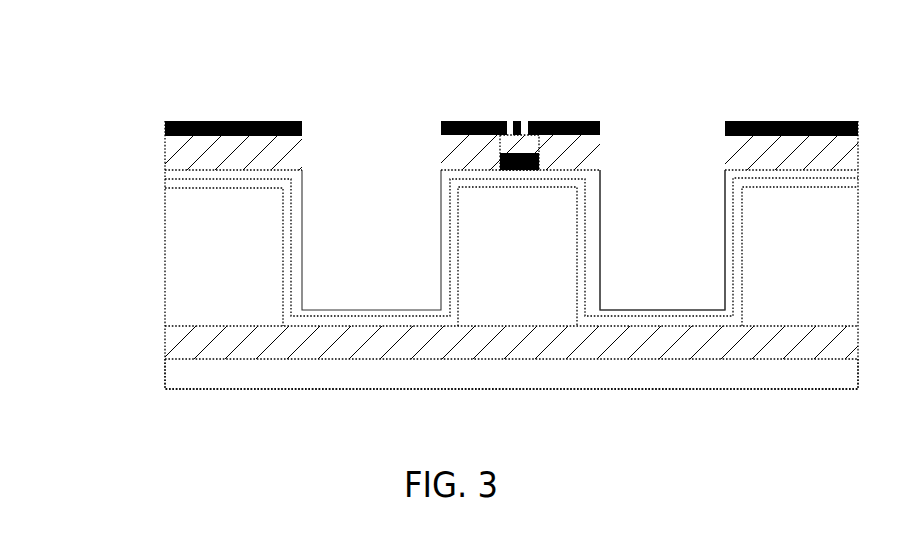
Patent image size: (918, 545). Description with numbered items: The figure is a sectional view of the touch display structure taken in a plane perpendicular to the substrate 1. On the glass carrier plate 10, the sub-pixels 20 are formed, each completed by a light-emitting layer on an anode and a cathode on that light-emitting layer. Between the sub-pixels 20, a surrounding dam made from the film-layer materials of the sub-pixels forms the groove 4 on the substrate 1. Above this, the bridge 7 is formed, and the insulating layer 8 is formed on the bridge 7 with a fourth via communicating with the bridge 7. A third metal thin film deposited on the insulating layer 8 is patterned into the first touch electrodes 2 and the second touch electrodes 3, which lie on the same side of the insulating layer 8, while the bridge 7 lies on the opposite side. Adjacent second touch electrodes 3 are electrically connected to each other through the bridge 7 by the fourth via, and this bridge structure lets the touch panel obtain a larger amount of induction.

The substrate 1 is at (165, 345).
The glass carrier plate 10 is at (165, 375).
The sub-pixels 20 is at (165, 235).
The first touch electrode 2 is at (517, 121).
The second touch electrode 3 is at (236, 121).
The groove 4 is at (678, 135).
The bridge 7 is at (497, 162).
The insulating layer 8 is at (601, 153).